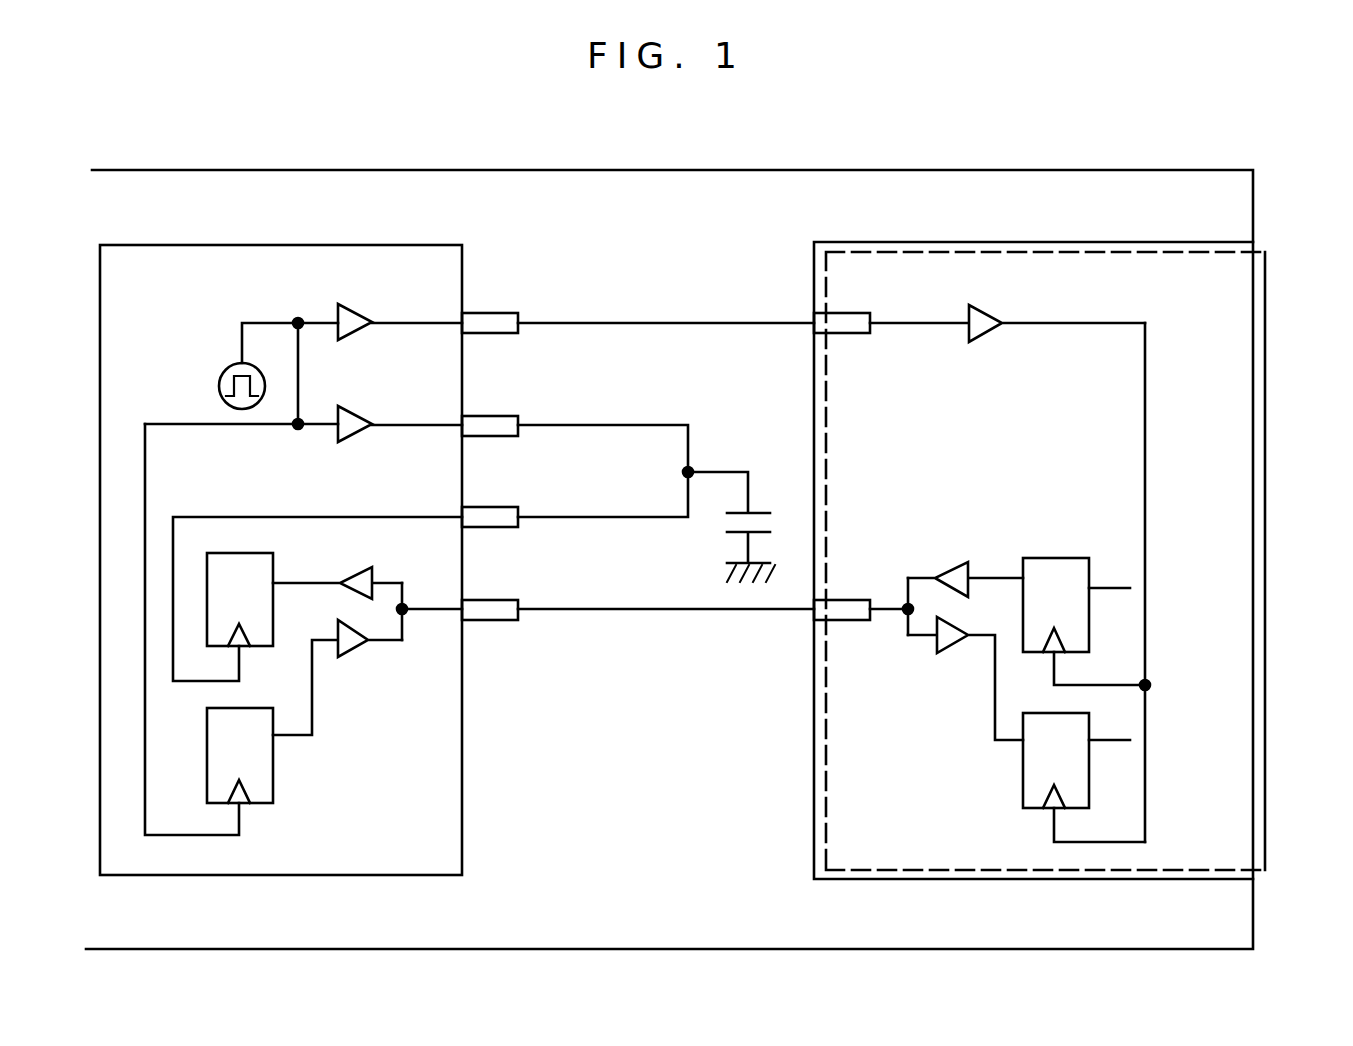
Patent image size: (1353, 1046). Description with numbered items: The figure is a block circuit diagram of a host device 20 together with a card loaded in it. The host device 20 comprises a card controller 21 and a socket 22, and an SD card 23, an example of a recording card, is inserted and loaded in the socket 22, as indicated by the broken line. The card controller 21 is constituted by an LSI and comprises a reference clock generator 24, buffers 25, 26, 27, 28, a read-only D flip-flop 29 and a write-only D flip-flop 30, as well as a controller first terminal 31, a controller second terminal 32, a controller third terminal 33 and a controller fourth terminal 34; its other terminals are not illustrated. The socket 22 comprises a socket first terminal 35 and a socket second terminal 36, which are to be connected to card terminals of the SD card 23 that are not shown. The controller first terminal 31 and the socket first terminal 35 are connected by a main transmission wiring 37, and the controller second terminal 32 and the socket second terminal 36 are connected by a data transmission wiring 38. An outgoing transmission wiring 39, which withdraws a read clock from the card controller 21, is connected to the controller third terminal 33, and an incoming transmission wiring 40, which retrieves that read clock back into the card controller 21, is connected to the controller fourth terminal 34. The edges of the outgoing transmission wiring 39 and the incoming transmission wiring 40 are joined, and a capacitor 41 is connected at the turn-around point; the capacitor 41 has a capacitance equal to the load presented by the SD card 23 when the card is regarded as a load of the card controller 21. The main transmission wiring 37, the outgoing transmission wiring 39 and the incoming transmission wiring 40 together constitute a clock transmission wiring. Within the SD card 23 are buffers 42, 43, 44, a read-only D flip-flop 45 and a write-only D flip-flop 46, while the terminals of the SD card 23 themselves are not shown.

The host device 20 is at (622, 170).
The card controller 21 is at (376, 245).
The socket 22 is at (937, 242).
The SD card 23 is at (1268, 290).
The reference clock generator 24 is at (220, 378).
The buffer 25 is at (358, 308).
The buffer 26 is at (358, 408).
The buffer 27 is at (360, 562).
The buffer 28 is at (355, 655).
The read-only D flip-flop 29 is at (275, 566).
The write-only D flip-flop 30 is at (248, 708).
The controller first terminal 31 is at (490, 313).
The controller second terminal 32 is at (490, 600).
The controller third terminal 33 is at (490, 416).
The controller fourth terminal 34 is at (490, 507).
The socket first terminal 35 is at (848, 334).
The socket second terminal 36 is at (840, 600).
The main transmission wiring 37 is at (604, 323).
The data transmission wiring 38 is at (604, 609).
The outgoing transmission wiring 39 is at (604, 425).
The incoming transmission wiring 40 is at (604, 517).
The capacitor 41 is at (760, 513).
The buffer 42 is at (985, 335).
The buffer 43 is at (930, 562).
The buffer 44 is at (948, 653).
The read-only D flip-flop 45 is at (1055, 558).
The write-only D flip-flop 46 is at (1023, 770).